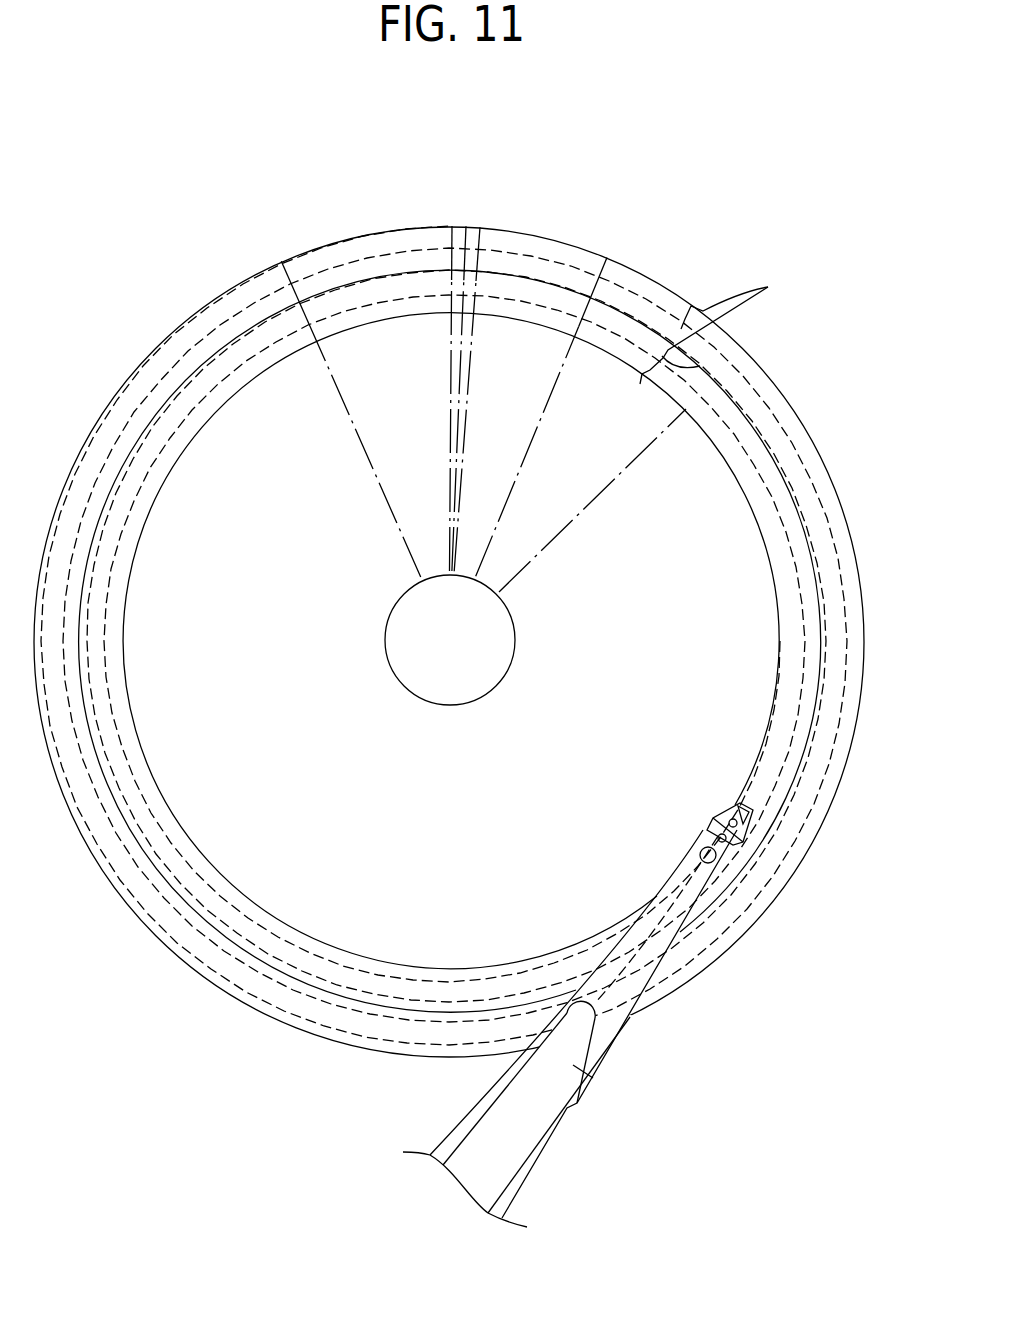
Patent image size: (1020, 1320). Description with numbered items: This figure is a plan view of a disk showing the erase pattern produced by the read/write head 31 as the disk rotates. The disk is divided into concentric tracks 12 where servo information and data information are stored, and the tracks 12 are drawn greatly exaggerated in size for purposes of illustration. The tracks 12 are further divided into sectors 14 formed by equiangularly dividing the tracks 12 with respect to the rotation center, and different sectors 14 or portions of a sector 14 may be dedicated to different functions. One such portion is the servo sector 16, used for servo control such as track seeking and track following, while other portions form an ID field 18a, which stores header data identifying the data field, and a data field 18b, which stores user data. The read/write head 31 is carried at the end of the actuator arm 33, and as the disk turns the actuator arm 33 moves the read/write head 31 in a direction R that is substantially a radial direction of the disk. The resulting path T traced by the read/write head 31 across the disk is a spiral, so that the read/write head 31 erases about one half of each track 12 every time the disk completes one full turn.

The track 12 is at (450, 633).
The sector 14 is at (443, 257).
The servo sector 16 is at (461, 223).
The ID field 18a is at (483, 222).
The data field 18b is at (553, 236).
The read/write head 31 is at (745, 843).
The actuator arm 33 is at (576, 1090).
The path T is at (200, 340).
The direction R is at (747, 805).